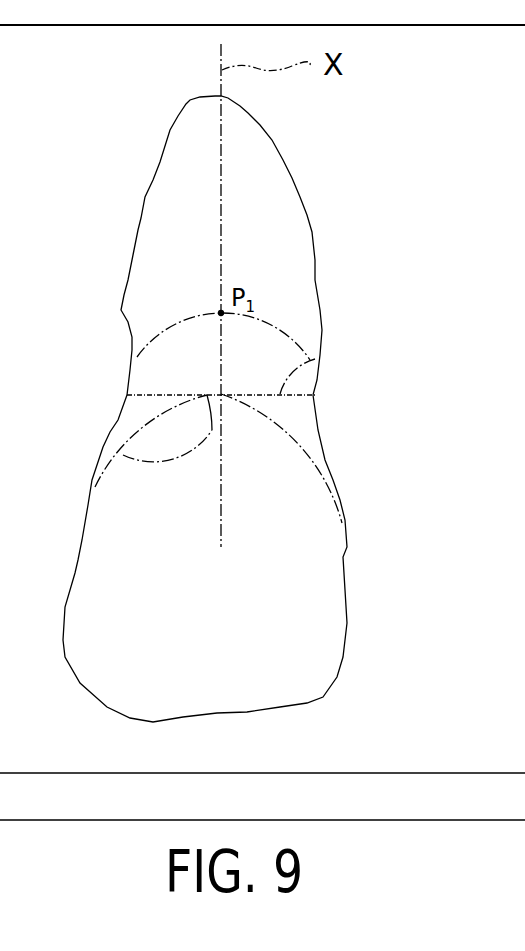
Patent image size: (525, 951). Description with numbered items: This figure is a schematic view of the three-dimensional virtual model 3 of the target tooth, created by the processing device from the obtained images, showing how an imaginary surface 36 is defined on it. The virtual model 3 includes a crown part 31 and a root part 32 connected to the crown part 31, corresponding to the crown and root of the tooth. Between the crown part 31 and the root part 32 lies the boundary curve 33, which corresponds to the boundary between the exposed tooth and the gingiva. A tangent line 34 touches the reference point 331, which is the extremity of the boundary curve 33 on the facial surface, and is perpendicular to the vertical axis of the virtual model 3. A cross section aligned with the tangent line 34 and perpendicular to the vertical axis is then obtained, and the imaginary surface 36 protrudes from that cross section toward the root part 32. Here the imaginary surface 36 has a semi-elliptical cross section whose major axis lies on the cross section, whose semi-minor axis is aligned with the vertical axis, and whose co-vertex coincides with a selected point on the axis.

The 3D virtual model 3 is at (247, 409).
The crown part 31 is at (305, 603).
The root part 32 is at (253, 192).
The boundary curve 33 is at (300, 443).
The reference point 331 is at (123, 457).
The tangent line 34 is at (315, 363).
The imaginary surface 36 is at (300, 348).